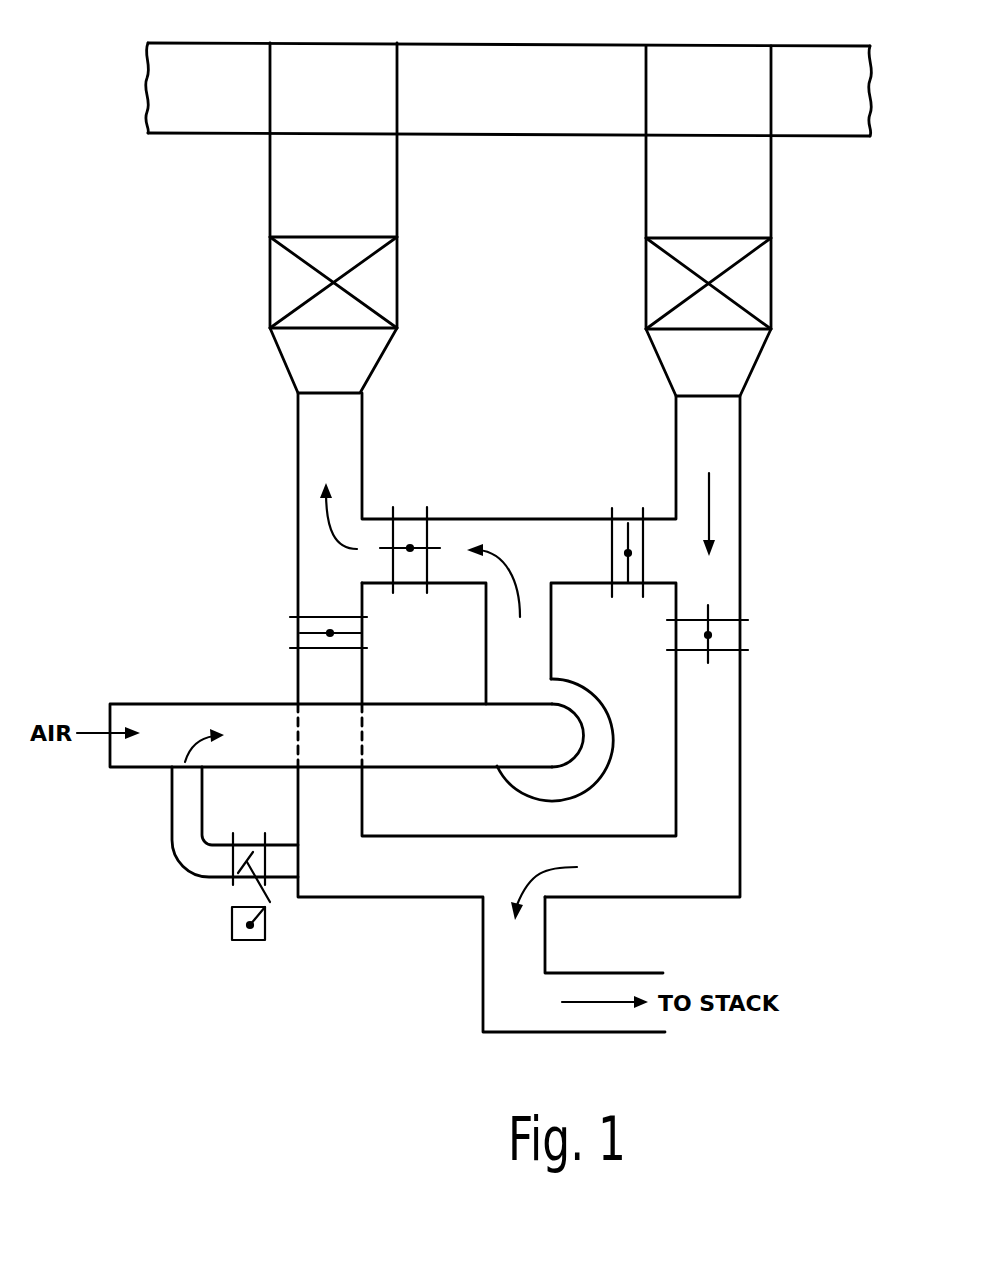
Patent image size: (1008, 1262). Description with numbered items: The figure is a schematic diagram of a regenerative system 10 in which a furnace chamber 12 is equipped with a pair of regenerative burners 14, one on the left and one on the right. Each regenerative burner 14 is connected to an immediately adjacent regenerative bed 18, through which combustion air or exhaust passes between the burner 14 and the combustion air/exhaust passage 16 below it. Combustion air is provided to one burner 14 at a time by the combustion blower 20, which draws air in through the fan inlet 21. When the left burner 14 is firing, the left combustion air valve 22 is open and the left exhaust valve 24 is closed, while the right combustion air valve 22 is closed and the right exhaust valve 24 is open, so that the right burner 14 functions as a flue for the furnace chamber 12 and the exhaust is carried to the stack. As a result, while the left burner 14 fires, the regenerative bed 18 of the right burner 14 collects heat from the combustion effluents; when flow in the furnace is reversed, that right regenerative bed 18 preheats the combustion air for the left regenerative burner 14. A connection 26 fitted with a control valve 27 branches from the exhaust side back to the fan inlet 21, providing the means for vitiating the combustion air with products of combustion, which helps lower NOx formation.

The regenerative system 10 is at (345, 948).
The furnace chamber 12 is at (777, 25).
The regenerative burner 14 is at (372, 195).
The combustion air/exhaust passage 16 is at (363, 364).
The regenerative bed 18 is at (380, 290).
The combustion blower 20 is at (588, 715).
The fan inlet 21 is at (168, 718).
The combustion air valve 22 is at (408, 535).
The exhaust valve 24 is at (315, 625).
The connection 26 is at (182, 804).
The control valve 27 is at (270, 902).